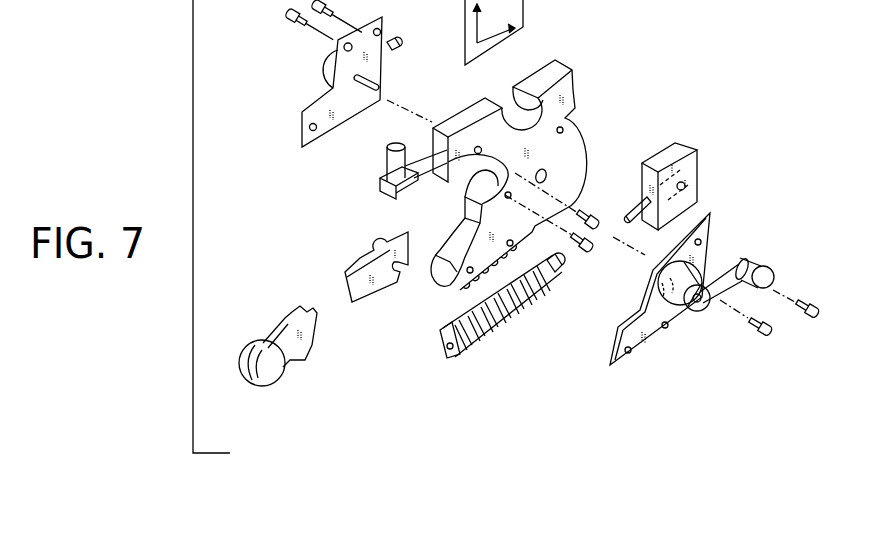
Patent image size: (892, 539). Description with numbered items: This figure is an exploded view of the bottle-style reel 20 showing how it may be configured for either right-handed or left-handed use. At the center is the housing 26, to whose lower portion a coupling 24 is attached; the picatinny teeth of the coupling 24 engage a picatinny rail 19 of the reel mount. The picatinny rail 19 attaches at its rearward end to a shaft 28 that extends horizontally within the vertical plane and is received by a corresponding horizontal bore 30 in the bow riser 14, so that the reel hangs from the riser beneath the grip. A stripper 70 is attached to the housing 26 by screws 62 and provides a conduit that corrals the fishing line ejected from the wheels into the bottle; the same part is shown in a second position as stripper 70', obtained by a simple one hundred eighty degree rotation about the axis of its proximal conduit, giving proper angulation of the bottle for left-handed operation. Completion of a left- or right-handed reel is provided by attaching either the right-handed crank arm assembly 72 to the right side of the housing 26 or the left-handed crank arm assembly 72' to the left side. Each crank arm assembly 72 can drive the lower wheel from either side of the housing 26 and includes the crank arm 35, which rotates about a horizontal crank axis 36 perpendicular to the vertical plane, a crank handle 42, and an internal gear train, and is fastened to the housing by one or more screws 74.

The bow riser 14 is at (697, 165).
The picatinny rail 19 is at (443, 325).
The bottle-style reel 20 is at (604, 74).
The coupling 24 is at (420, 318).
The housing 26 is at (548, 62).
The shaft 28 is at (557, 275).
The bore 30 is at (685, 185).
The crank arm 35 is at (396, 53).
The crank axis 36 is at (395, 105).
The crank handle 42 is at (760, 258).
The screws 62 is at (600, 229).
The stripper 70 is at (366, 257).
The stripper 70' is at (272, 340).
The right-handed crank arm assembly 72 is at (660, 311).
The left-handed crank arm assembly 72' is at (297, 99).
The screws 74 is at (283, 14).